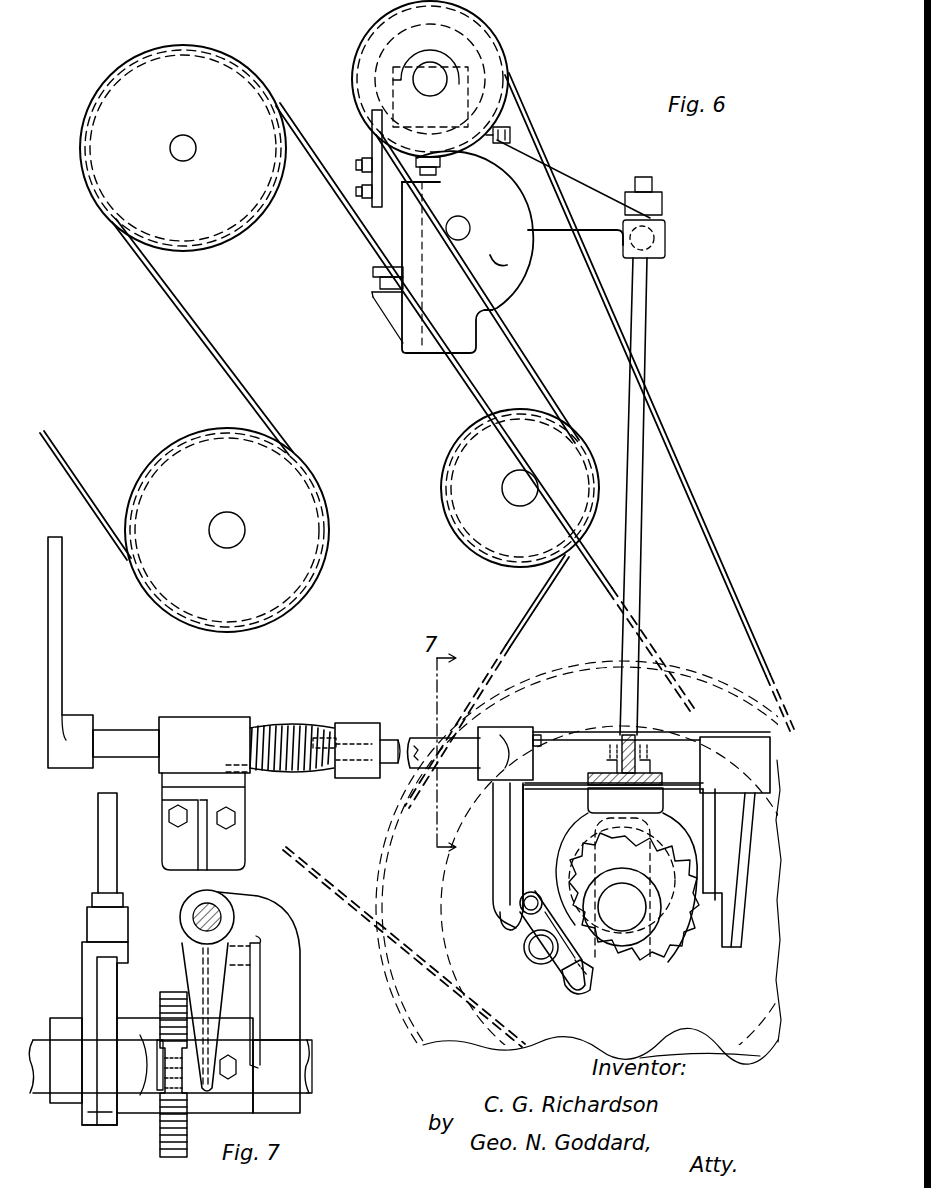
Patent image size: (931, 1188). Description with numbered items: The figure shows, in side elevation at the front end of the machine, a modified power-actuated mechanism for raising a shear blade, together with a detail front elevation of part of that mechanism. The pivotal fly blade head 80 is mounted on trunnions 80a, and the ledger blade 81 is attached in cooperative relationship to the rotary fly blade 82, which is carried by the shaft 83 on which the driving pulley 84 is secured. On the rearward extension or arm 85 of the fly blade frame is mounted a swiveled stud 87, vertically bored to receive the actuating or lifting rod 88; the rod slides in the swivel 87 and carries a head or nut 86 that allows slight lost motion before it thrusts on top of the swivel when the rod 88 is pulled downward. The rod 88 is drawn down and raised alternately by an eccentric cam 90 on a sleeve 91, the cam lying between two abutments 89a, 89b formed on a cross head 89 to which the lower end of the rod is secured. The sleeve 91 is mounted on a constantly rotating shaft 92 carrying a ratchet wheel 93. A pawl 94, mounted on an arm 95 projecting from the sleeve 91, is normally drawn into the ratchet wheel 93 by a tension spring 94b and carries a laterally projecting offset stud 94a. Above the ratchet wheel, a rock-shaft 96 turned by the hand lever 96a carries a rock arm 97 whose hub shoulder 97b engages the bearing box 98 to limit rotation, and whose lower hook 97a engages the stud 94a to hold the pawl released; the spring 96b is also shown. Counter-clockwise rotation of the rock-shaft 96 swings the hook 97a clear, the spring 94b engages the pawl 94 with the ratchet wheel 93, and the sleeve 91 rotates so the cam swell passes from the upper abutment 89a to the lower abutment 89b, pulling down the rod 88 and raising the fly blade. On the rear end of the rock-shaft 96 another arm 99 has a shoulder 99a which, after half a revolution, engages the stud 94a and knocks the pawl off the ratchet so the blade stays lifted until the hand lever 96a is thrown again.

In FIG. 6, the pivotal fly blade head 80 is at (490, 253).
In FIG. 6, the trunnions 80a is at (460, 226).
In FIG. 6, the ledger blade 81 is at (372, 143).
In FIG. 6, the rotary fly blade 82 is at (477, 50).
In FIG. 6, the shaft 83 is at (438, 83).
In FIG. 6, the driving pulley 84 is at (498, 114).
In FIG. 6, the rearward extension or arm 85 is at (586, 194).
In FIG. 6, the head or nut 86 is at (660, 205).
In FIG. 6, the swiveled stud 87 is at (664, 240).
In FIG. 6, the actuating or lifting rod 88 is at (635, 450).
In FIG. 7, the actuating or lifting rod 88 is at (98, 845).
In FIG. 7, the cross head 89 is at (90, 968).
In FIG. 6, the upper abutment 89a is at (640, 807).
In FIG. 7, the upper abutment 89a is at (110, 947).
In FIG. 7, the lower abutment 89b is at (103, 1119).
In FIG. 6, the eccentric cam 90 is at (570, 827).
In FIG. 7, the eccentric cam 90 is at (112, 985).
In FIG. 7, the sleeve 91 is at (120, 1030).
In FIG. 6, the constantly rotating shaft 92 is at (634, 924).
In FIG. 7, the constantly rotating shaft 92 is at (310, 1050).
In FIG. 6, the ratchet wheel 93 is at (662, 958).
In FIG. 7, the ratchet wheel 93 is at (162, 1005).
In FIG. 6, the pawl 94 is at (548, 990).
In FIG. 6, the offset pin or stud 94a is at (520, 903).
In FIG. 7, the offset pin or stud 94a is at (192, 1080).
In FIG. 6, the tension spring 94b is at (588, 978).
In FIG. 6, the arm 95 is at (550, 863).
In FIG. 7, the arm 95 is at (148, 1070).
In FIG. 6, the rock-shaft 96 is at (117, 740).
In FIG. 6, the hand lever 96a is at (62, 665).
In FIG. 6, the spring 96b is at (270, 732).
In FIG. 6, the rock arm 97 is at (510, 760).
In FIG. 6, the hook 97a is at (537, 952).
In FIG. 6, the shoulder 97b is at (537, 732).
In FIG. 6, the bearing box 98 is at (580, 757).
In FIG. 6, the arm 99 is at (717, 810).
In FIG. 6, the shoulder 99a is at (730, 947).